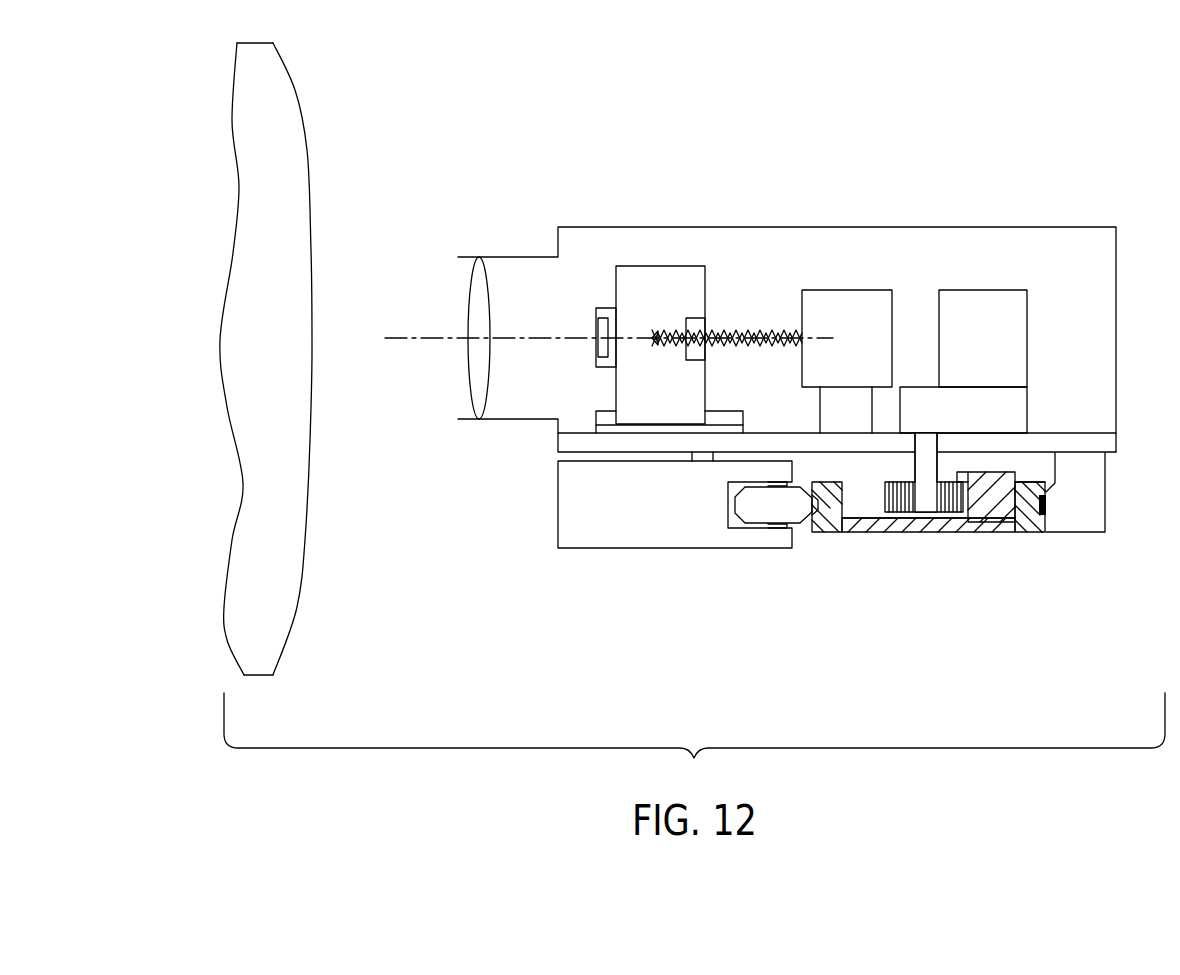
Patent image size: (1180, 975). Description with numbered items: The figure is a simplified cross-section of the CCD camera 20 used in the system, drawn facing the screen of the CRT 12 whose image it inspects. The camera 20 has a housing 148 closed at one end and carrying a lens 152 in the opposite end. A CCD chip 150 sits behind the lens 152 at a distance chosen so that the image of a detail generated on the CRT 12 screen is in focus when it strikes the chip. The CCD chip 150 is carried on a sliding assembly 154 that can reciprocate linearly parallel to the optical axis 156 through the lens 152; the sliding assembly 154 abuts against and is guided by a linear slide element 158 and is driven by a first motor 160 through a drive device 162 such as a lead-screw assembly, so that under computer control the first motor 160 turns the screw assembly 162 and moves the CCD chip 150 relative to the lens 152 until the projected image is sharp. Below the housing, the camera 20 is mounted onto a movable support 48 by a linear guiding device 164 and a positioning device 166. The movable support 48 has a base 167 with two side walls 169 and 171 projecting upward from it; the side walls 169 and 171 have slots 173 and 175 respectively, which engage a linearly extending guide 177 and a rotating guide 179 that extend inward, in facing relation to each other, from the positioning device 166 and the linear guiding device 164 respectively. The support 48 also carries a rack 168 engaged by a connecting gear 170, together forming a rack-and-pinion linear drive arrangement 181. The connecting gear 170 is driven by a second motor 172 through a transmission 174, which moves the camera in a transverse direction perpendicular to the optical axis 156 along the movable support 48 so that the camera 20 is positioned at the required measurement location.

The CRT 12 is at (310, 173).
The camera 20 is at (568, 152).
The movable support 48 is at (893, 531).
The housing 148 is at (1040, 227).
The CCD chip 150 is at (595, 320).
The lens 152 is at (470, 300).
The sliding assembly 154 is at (673, 266).
The optical axis 156 is at (433, 352).
The linear slide element 158 is at (600, 412).
The first motor 160 is at (840, 290).
The drive device 162 is at (748, 332).
The linear guiding device 164 is at (1110, 470).
The positioning device 166 is at (745, 565).
The base 167 is at (907, 520).
The rack 168 is at (990, 510).
The side wall 169 is at (830, 487).
The connecting gear 170 is at (925, 495).
The side wall 171 is at (1033, 490).
The second motor 172 is at (975, 290).
The slot 173 is at (818, 522).
The transmission 174 is at (1028, 410).
The slot 175 is at (1047, 510).
The linearly extending guide 177 is at (1047, 501).
The rotating guide 179 is at (797, 515).
The rack-and-pinion linear drive arrangement 181 is at (996, 452).